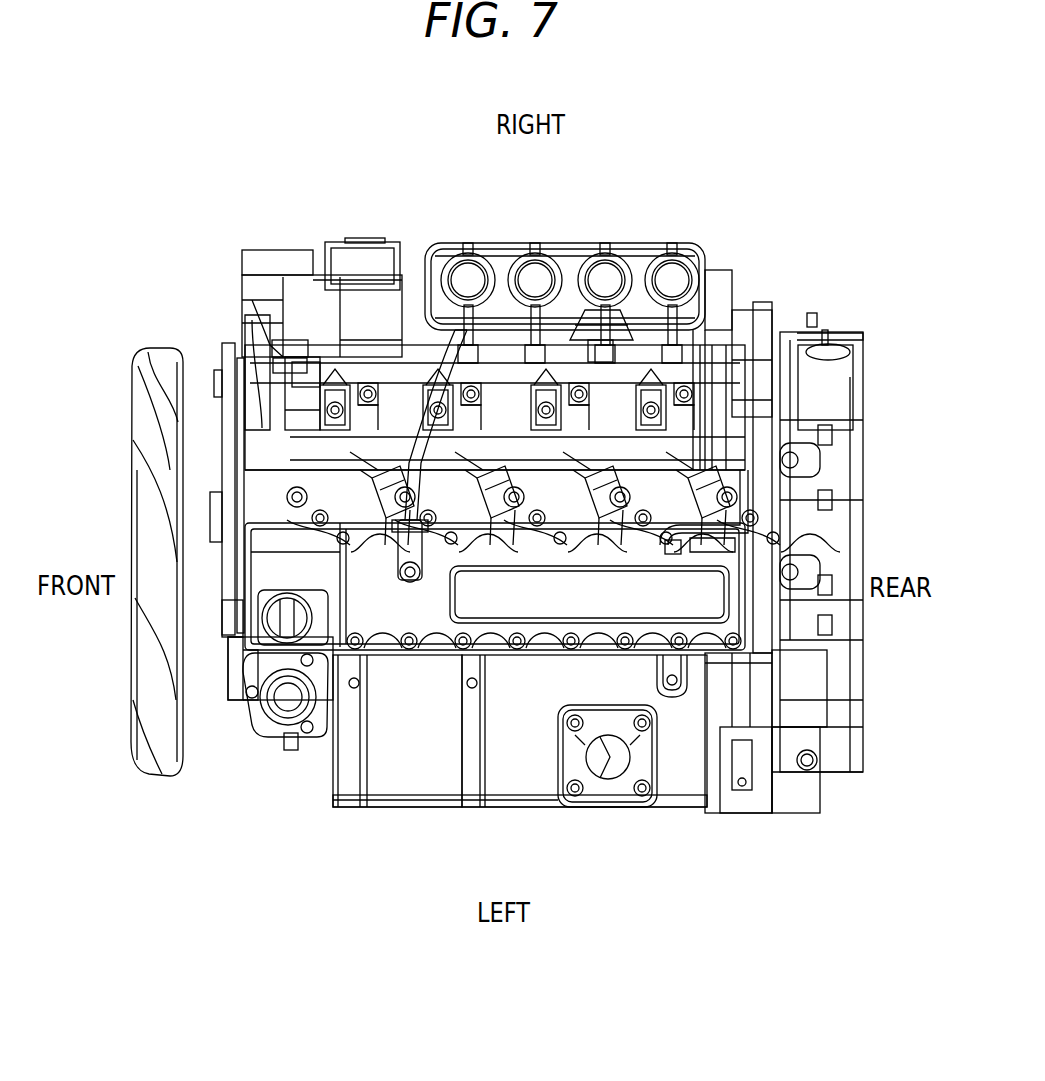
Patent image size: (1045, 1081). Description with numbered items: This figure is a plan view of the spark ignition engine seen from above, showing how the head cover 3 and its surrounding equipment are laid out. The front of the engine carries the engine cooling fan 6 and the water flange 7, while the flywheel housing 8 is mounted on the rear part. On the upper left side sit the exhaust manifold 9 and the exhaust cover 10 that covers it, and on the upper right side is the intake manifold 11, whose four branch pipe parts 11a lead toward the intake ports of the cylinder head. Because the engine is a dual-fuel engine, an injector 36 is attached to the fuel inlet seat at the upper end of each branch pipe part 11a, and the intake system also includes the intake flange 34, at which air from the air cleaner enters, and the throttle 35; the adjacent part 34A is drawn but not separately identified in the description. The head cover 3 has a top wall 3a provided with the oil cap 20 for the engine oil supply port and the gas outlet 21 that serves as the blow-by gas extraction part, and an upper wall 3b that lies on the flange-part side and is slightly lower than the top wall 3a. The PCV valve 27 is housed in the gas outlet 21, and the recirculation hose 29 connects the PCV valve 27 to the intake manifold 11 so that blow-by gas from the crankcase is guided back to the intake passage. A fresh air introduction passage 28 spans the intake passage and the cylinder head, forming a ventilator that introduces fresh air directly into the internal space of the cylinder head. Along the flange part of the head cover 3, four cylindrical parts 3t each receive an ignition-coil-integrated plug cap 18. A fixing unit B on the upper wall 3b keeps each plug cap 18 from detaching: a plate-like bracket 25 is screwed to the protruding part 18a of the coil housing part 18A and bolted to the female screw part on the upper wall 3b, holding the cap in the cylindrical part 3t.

The head cover 3 is at (213, 517).
The top wall 3a is at (530, 653).
The upper wall 3b is at (365, 552).
The cylindrical part 3t is at (628, 553).
The engine cooling fan 6 is at (140, 688).
The water flange 7 is at (283, 718).
The flywheel housing 8 is at (852, 680).
The exhaust manifold 9 is at (627, 794).
The exhaust cover 10 is at (440, 786).
The intake manifold 11 is at (657, 261).
The branch pipe part 11a is at (492, 360).
The ignition-coil-integrated plug cap 18 is at (372, 470).
The coil housing part 18A is at (827, 472).
The protruding part 18a is at (800, 542).
The oil cap 20 is at (240, 640).
The gas outlet 21 is at (430, 548).
The bracket 25 is at (673, 547).
The PCV valve 27 is at (262, 612).
The fresh air introduction passage 28 is at (277, 412).
The recirculation hose 29 is at (432, 312).
The intake flange 34 is at (292, 310).
The intake duct 34A is at (245, 292).
The throttle 35 is at (373, 248).
The injector 36 is at (406, 440).
The fixing unit B is at (535, 555).